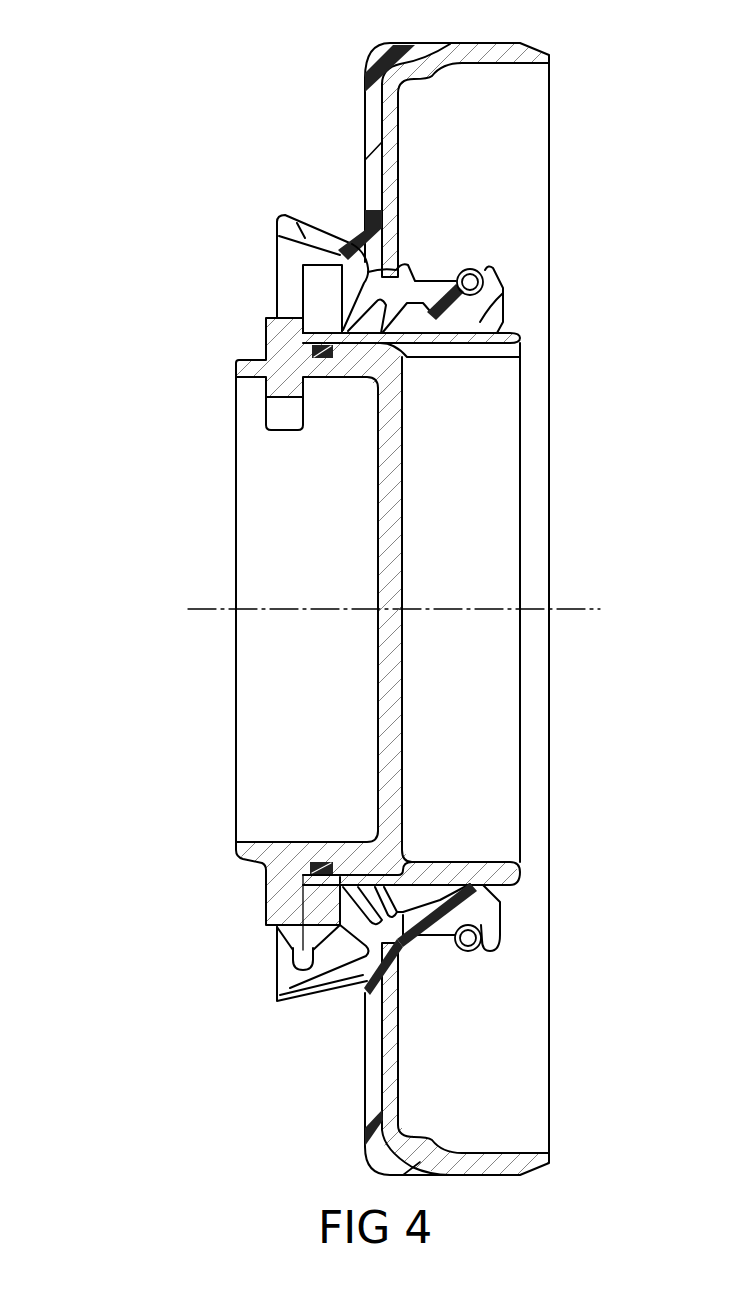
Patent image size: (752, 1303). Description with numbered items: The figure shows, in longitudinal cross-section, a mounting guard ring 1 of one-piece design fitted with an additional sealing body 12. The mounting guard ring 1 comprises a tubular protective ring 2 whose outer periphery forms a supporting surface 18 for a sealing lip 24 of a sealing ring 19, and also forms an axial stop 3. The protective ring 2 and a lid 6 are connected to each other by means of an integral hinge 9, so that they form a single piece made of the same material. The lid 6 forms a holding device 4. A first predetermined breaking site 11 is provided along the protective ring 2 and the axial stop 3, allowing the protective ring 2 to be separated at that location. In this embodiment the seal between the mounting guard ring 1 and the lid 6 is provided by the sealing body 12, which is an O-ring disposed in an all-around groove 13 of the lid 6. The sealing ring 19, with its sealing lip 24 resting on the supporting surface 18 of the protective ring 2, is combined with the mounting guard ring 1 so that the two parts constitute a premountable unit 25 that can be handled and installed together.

The mounting guard ring 1 is at (140, 609).
The protective ring 2 is at (490, 870).
The axial stop 3 is at (317, 908).
The holding device 4 is at (278, 412).
The lid 6 is at (383, 560).
The integral hinge 9 is at (296, 958).
The first predetermined breaking site 11 is at (313, 283).
The sealing body 12 is at (311, 862).
The all-around groove 13 is at (310, 855).
The supporting surface 18 is at (508, 323).
The sealing ring 19 is at (487, 45).
The sealing lip 24 is at (505, 290).
The premountable unit 25 is at (506, 944).